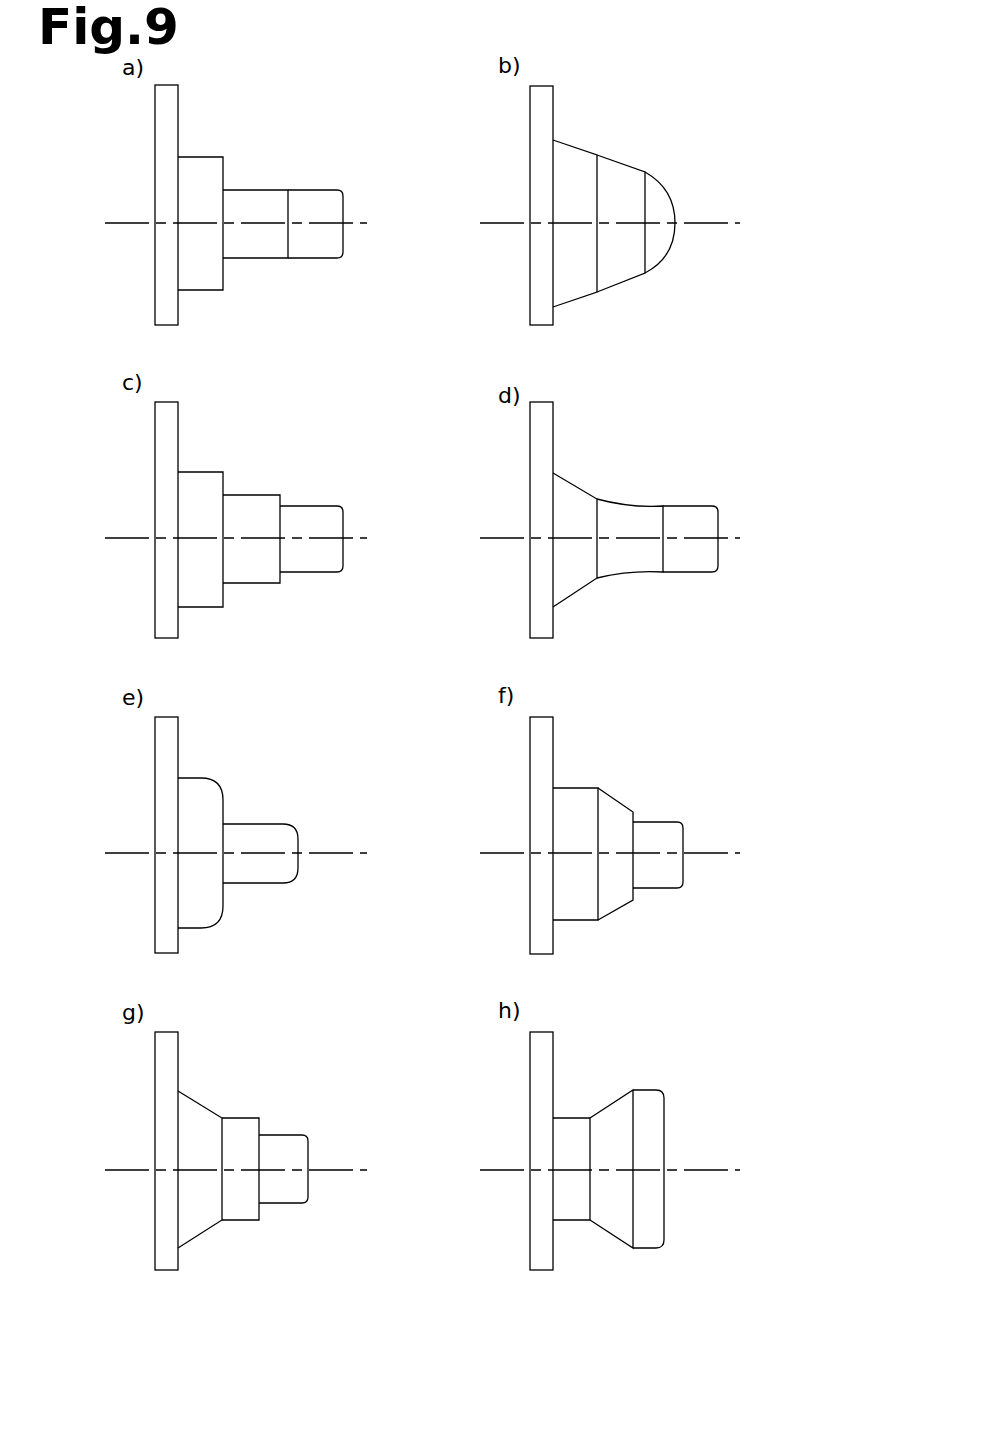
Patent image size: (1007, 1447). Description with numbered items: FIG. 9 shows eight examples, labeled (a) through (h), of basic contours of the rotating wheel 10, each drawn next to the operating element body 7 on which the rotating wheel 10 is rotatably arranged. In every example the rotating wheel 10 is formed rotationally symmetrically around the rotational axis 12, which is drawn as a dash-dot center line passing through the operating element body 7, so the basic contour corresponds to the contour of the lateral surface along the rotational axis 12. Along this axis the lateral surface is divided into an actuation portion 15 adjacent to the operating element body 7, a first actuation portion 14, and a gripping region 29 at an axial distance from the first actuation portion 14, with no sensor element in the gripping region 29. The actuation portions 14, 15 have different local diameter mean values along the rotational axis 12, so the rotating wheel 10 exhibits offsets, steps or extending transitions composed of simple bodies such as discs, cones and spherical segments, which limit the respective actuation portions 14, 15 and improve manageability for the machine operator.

The operating element body 7 is at (165, 120).
The rotating wheel 10 is at (287, 1087).
The rotational axis 12 is at (500, 225).
The first actuation portion 14 is at (625, 1330).
The actuation portion 15 is at (585, 1325).
The gripping region 29 is at (303, 1303).